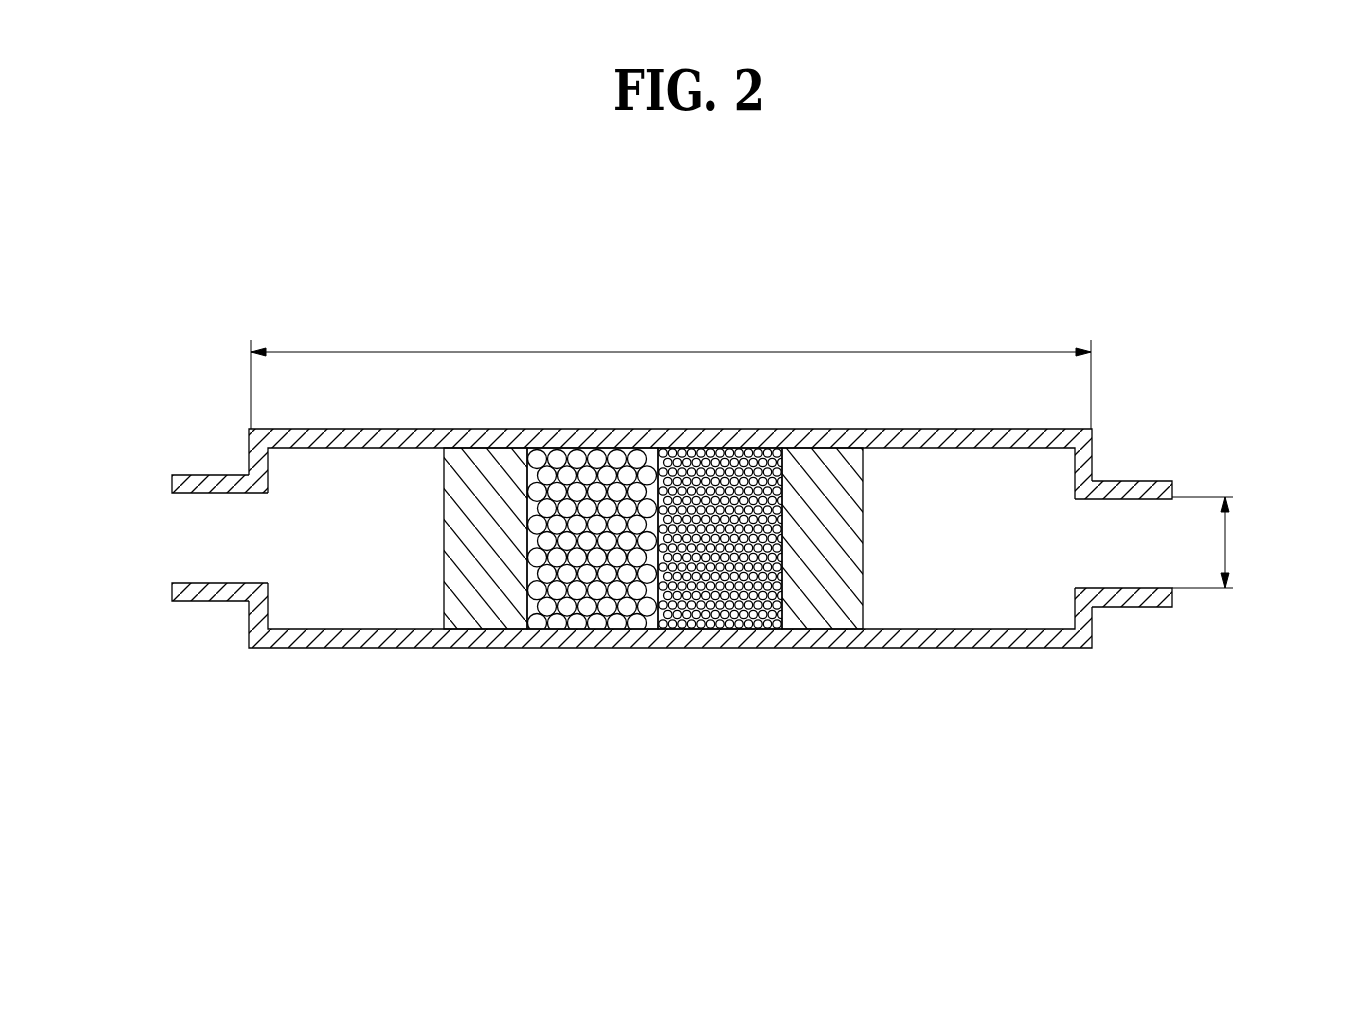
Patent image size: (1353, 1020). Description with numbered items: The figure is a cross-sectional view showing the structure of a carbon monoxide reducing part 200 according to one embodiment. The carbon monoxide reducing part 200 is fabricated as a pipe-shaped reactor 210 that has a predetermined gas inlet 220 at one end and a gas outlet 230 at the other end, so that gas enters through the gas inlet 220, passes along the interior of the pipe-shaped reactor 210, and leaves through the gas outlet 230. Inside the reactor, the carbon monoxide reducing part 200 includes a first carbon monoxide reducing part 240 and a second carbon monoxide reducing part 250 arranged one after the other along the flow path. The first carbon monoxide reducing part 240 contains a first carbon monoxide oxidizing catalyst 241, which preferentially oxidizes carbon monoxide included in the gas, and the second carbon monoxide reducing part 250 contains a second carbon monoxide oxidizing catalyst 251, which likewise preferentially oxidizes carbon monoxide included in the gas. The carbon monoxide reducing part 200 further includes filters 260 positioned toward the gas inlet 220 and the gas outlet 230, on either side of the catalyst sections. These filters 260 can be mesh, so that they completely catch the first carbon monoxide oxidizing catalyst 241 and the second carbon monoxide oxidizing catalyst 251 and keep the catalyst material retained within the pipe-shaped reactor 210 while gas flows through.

The carbon monoxide reducing part 200 is at (680, 254).
The pipe-shaped reactor 210 is at (973, 651).
The gas inlet 220 is at (160, 558).
The gas outlet 230 is at (1182, 563).
The first carbon monoxide reducing part 240 is at (528, 429).
The first carbon monoxide oxidizing catalyst 241 is at (575, 620).
The second carbon monoxide reducing part 250 is at (658, 429).
The second carbon monoxide oxidizing catalyst 251 is at (683, 632).
The filters 260 is at (490, 617).